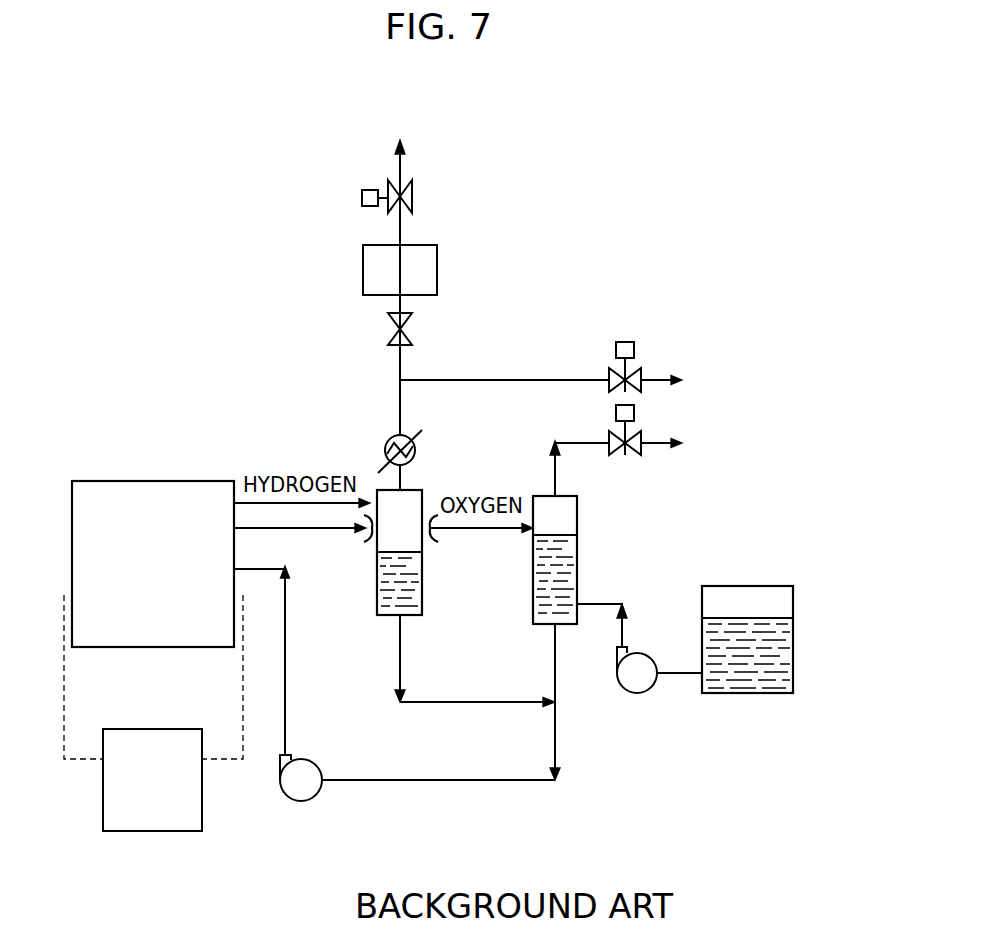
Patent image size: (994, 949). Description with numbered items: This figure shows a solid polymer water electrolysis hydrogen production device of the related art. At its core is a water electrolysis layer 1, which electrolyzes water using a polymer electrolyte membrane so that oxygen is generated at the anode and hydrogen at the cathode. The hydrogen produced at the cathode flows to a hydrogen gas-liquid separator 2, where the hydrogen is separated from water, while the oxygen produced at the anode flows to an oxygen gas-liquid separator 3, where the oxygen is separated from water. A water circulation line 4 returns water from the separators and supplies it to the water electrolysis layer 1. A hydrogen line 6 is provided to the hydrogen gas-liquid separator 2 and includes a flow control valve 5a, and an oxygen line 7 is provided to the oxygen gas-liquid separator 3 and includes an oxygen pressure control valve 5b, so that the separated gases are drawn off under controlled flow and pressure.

The water electrolysis layer 1 is at (72, 525).
The hydrogen gas-liquid separator 2 is at (424, 572).
The oxygen gas-liquid separator 3 is at (578, 548).
The water circulation line 4 is at (429, 782).
The flow control valve 5a is at (414, 201).
The oxygen pressure control valve 5b is at (621, 456).
The hydrogen line 6 is at (398, 366).
The oxygen line 7 is at (553, 470).